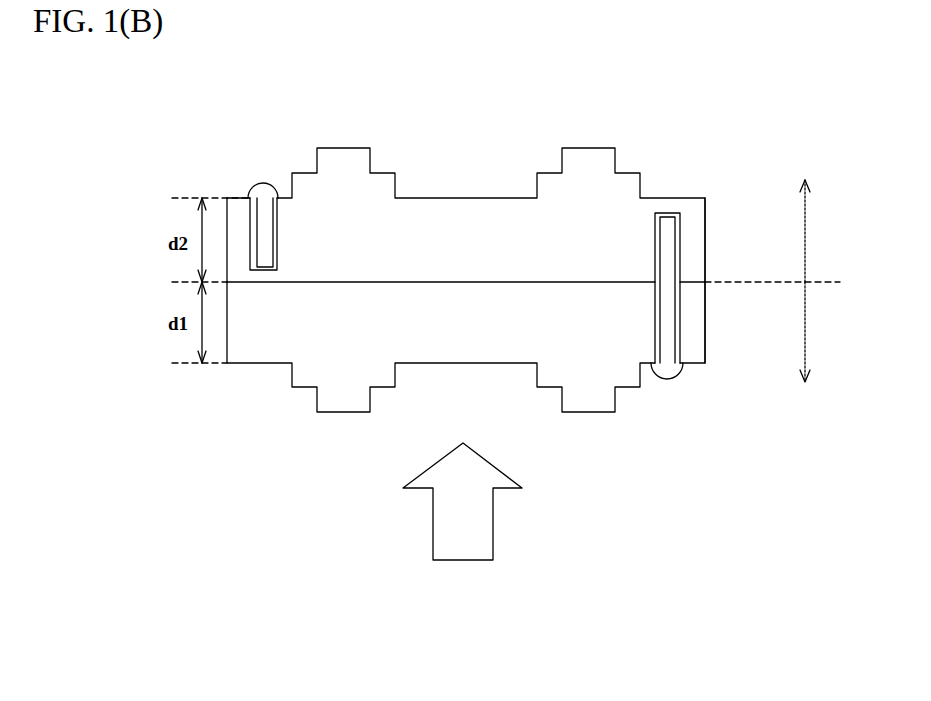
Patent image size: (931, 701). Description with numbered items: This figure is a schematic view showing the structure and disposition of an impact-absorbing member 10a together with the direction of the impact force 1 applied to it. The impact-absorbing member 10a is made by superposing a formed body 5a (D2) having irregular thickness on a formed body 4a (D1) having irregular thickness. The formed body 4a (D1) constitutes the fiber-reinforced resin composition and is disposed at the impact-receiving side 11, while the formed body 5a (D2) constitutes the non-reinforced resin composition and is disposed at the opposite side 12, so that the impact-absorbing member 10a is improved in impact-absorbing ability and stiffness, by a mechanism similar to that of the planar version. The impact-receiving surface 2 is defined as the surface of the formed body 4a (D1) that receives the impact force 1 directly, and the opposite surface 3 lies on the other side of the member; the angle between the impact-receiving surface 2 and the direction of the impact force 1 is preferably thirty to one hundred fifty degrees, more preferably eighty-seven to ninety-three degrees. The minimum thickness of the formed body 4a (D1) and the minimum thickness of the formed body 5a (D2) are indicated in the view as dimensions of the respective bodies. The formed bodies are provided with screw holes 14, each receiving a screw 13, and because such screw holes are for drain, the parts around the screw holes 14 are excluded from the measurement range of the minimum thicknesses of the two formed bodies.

The impact force 1 is at (470, 560).
The impact-receiving surface 2 is at (432, 363).
The opposite surface 3 is at (428, 199).
The formed body (D1) 4a is at (695, 330).
The formed body (D2) 5a is at (695, 232).
The impact-absorbing member 10a is at (492, 247).
The impact-receiving side 11 is at (817, 332).
The opposite side 12 is at (817, 231).
The screw 13 is at (263, 193).
The screw hole 14 is at (264, 267).